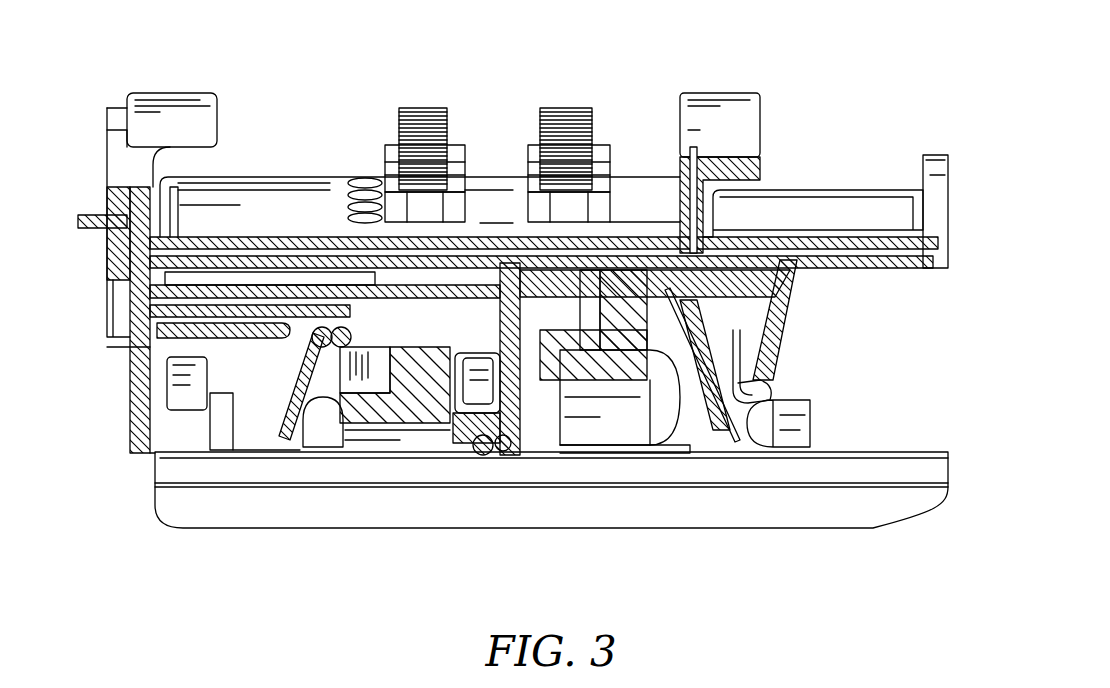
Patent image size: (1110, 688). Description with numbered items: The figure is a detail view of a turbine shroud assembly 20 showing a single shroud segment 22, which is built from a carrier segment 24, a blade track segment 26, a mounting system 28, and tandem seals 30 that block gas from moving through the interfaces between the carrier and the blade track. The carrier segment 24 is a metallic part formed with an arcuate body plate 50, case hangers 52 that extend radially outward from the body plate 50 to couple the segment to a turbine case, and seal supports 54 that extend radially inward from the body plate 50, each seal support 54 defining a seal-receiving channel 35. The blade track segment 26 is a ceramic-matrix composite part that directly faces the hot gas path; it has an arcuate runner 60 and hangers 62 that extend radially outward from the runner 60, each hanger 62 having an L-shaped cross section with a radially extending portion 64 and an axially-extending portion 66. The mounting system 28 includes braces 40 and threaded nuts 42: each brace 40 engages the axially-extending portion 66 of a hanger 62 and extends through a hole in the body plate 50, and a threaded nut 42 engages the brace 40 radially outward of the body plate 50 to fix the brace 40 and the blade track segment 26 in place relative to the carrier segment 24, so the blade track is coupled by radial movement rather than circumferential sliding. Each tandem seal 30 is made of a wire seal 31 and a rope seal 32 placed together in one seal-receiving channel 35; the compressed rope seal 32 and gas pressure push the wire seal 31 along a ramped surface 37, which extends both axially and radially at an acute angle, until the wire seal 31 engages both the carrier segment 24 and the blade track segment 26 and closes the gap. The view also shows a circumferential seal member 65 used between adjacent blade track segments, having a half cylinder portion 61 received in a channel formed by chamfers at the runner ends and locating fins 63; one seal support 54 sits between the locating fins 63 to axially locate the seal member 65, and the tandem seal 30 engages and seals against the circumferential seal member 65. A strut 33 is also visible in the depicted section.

The base assembly 20 is at (812, 76).
The shroud segment 22 is at (862, 104).
The carrier segment 24 is at (870, 188).
The blade track segment 26 is at (790, 540).
The mounting system 28 is at (600, 122).
The tandem seal 30 is at (312, 325).
The wire seal 31 is at (312, 358).
The rope seal 32 is at (235, 443).
The slanted support block 33 is at (707, 313).
The seal-receiving channel 35 is at (337, 340).
The ramped surface 37 is at (305, 342).
The brace 40 is at (470, 342).
The threaded nut 42 is at (453, 202).
The body plate 50 is at (254, 170).
The case hanger 52 is at (170, 92).
The seal support 54 is at (325, 340).
The runner 60 is at (685, 537).
The half cylinder portion 61 is at (858, 473).
The hanger 62 is at (745, 322).
The locating fin 63 is at (560, 443).
The radially extending portion 64 is at (743, 413).
The circumferential seal member 65 is at (860, 438).
The axially-extending portion 66 is at (650, 295).